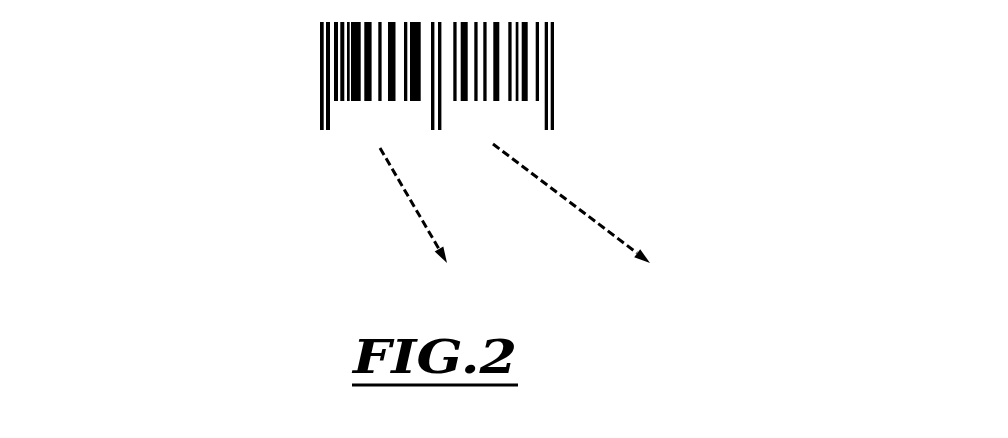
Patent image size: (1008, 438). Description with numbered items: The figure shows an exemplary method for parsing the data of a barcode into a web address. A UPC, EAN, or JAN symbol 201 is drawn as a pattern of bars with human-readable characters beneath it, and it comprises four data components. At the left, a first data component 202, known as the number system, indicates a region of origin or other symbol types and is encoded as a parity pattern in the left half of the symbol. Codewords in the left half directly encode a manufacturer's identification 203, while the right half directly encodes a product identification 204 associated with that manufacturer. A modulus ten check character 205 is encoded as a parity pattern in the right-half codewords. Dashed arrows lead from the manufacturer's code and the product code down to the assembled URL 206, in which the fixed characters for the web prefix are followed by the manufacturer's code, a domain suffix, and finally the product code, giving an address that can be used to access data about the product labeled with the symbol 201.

The symbol 201 is at (554, 64).
The first data component 202 is at (297, 130).
The manufacturer's identification 203 is at (346, 142).
The product identification 204 is at (535, 135).
The check character 205 is at (588, 128).
The URL 206 is at (723, 302).